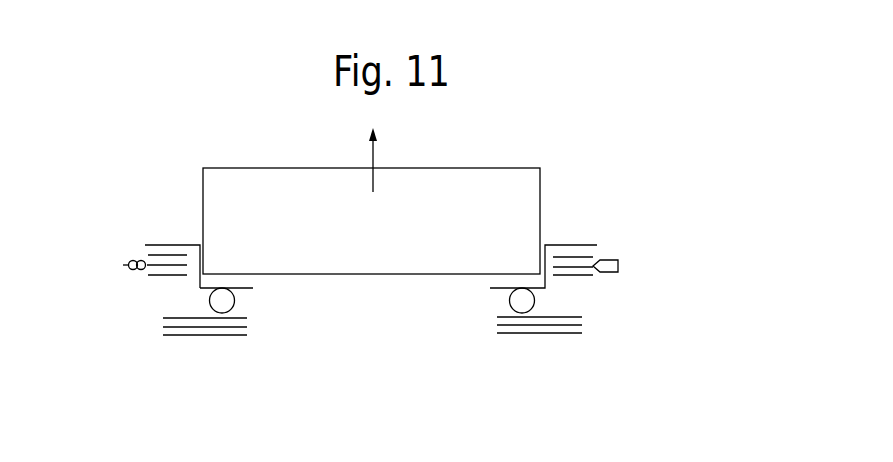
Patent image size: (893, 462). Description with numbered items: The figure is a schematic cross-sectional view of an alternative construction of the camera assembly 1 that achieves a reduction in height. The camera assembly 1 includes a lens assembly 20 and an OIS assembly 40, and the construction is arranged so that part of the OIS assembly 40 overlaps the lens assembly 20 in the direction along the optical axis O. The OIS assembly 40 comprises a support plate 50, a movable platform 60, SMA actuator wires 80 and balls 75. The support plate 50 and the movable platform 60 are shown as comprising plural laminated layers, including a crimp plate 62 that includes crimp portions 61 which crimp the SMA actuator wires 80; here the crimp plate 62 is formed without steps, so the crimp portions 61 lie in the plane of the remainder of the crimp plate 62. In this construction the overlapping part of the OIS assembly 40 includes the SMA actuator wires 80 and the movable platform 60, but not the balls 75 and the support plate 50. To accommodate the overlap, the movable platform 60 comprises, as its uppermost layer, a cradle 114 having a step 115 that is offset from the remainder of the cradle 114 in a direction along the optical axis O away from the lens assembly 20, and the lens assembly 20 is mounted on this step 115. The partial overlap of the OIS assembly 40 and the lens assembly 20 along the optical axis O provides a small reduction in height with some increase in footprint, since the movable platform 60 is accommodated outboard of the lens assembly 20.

The camera assembly 1 is at (278, 149).
The optical axis O is at (374, 156).
The lens assembly 20 is at (670, 167).
The OIS assembly 40 is at (622, 243).
The support plate 50 is at (183, 328).
The movable platform 60 is at (177, 256).
The crimp portions 61 is at (131, 261).
The crimp plate 62 is at (165, 276).
The balls 75 is at (222, 313).
The SMA actuator wires 80 is at (135, 270).
The cradle 114 is at (158, 245).
The step 115 is at (243, 290).